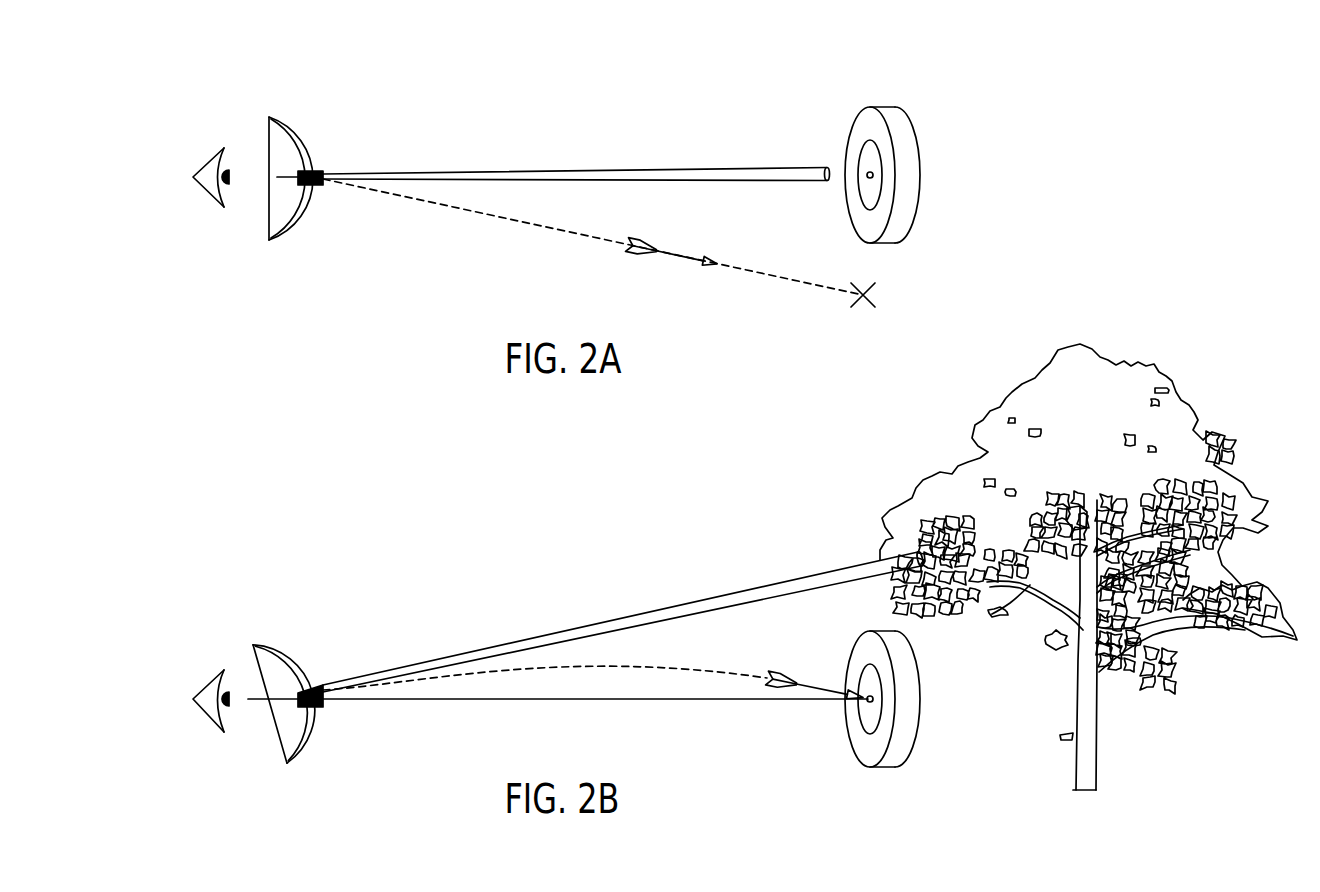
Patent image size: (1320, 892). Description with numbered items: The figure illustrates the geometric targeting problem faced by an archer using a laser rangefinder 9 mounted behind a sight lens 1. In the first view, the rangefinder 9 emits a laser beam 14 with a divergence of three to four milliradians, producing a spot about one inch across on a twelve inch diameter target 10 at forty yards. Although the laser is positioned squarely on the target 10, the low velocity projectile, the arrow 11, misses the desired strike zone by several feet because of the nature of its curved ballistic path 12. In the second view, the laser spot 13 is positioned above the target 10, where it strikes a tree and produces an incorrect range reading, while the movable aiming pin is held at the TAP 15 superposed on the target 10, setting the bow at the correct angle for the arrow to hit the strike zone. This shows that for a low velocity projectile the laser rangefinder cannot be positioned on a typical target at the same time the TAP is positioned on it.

In FIG. 2A, the lens / sight optic 1 is at (289, 116).
In FIG. 2B, the lens / sight optic 1 is at (289, 647).
In FIG. 2A, the laser rangefinder 9 is at (321, 161).
In FIG. 2B, the laser rangefinder 9 is at (321, 677).
In FIG. 2A, the target 10 is at (844, 130).
In FIG. 2B, the target 10 is at (843, 662).
In FIG. 2A, the low velocity projectile (arrow) 11 is at (676, 258).
In FIG. 2A, the ballistic path 12 is at (507, 224).
In FIG. 2B, the laser spot 13 is at (912, 542).
In FIG. 2A, the laser beam 14 is at (722, 168).
In FIG. 2B, the laser beam 14 is at (715, 597).
In FIG. 2B, the TAP (target aiming point) 15 is at (864, 709).